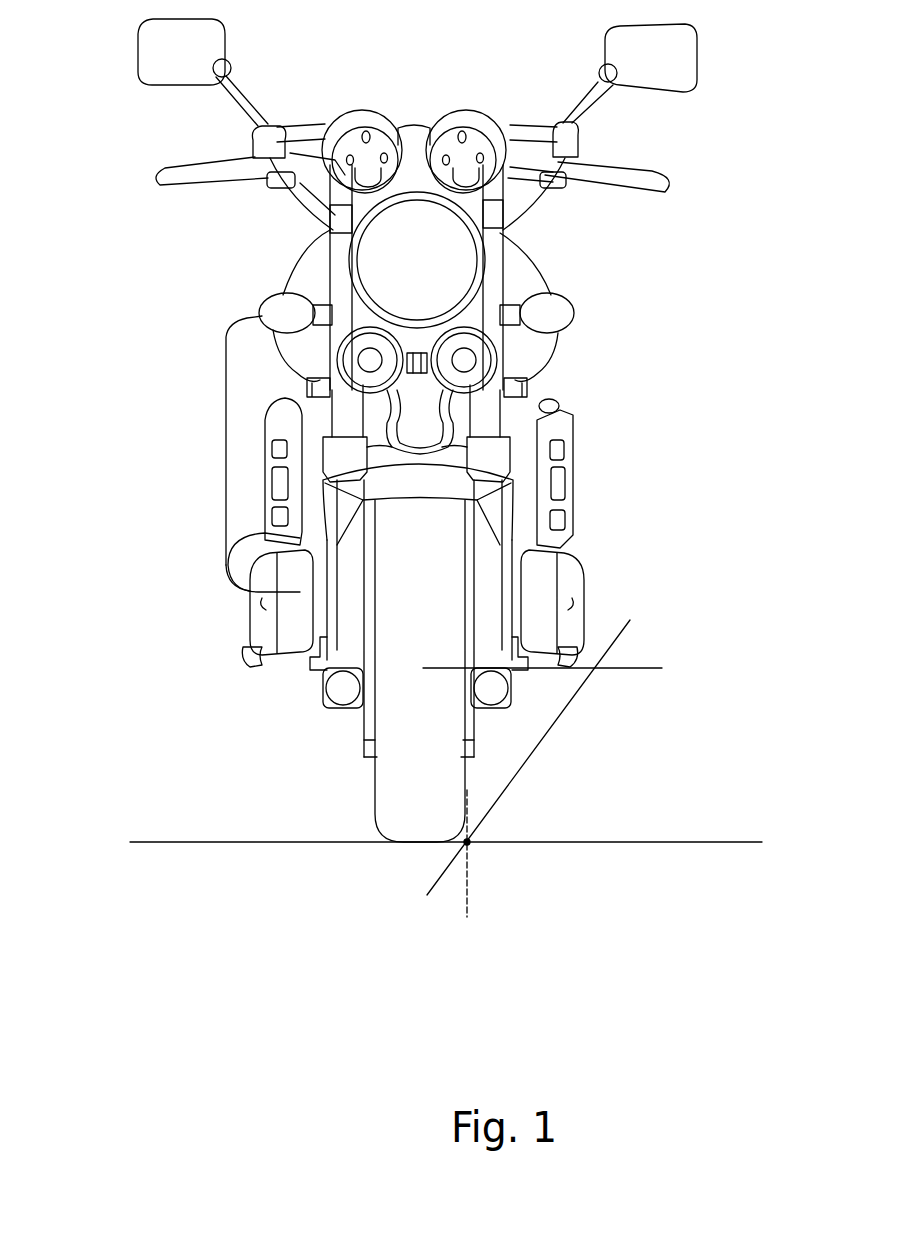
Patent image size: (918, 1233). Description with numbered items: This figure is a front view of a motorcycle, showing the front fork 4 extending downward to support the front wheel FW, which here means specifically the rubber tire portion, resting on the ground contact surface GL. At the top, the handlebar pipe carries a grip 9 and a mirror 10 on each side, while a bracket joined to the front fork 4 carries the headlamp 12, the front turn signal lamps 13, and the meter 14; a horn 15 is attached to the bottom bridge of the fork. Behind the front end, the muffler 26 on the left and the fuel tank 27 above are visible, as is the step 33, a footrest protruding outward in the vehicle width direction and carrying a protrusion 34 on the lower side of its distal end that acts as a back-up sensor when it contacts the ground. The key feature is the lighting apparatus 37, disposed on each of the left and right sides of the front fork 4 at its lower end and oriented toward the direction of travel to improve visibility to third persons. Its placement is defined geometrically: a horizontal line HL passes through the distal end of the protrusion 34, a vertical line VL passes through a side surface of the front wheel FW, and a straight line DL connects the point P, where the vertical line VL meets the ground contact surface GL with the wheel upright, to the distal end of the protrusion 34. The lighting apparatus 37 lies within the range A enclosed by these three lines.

The front fork 4 is at (310, 390).
The grip 9 is at (202, 161).
The mirror 10 is at (150, 63).
The headlamp 12 is at (450, 268).
The front turn signal lamp 13 is at (262, 307).
The meter 14 is at (353, 117).
The horn 15 is at (347, 348).
The muffler 26 is at (242, 447).
The fuel tank 27 is at (542, 290).
The step 33 is at (247, 657).
The protrusion 34 is at (250, 667).
The lighting apparatus 37 is at (340, 695).
The front wheel FW is at (387, 797).
The ground contact surface GL is at (727, 842).
The vertical line VL is at (470, 910).
The straight line DL is at (627, 620).
The horizontal line HL is at (643, 670).
The point P is at (477, 853).
The range A is at (497, 773).